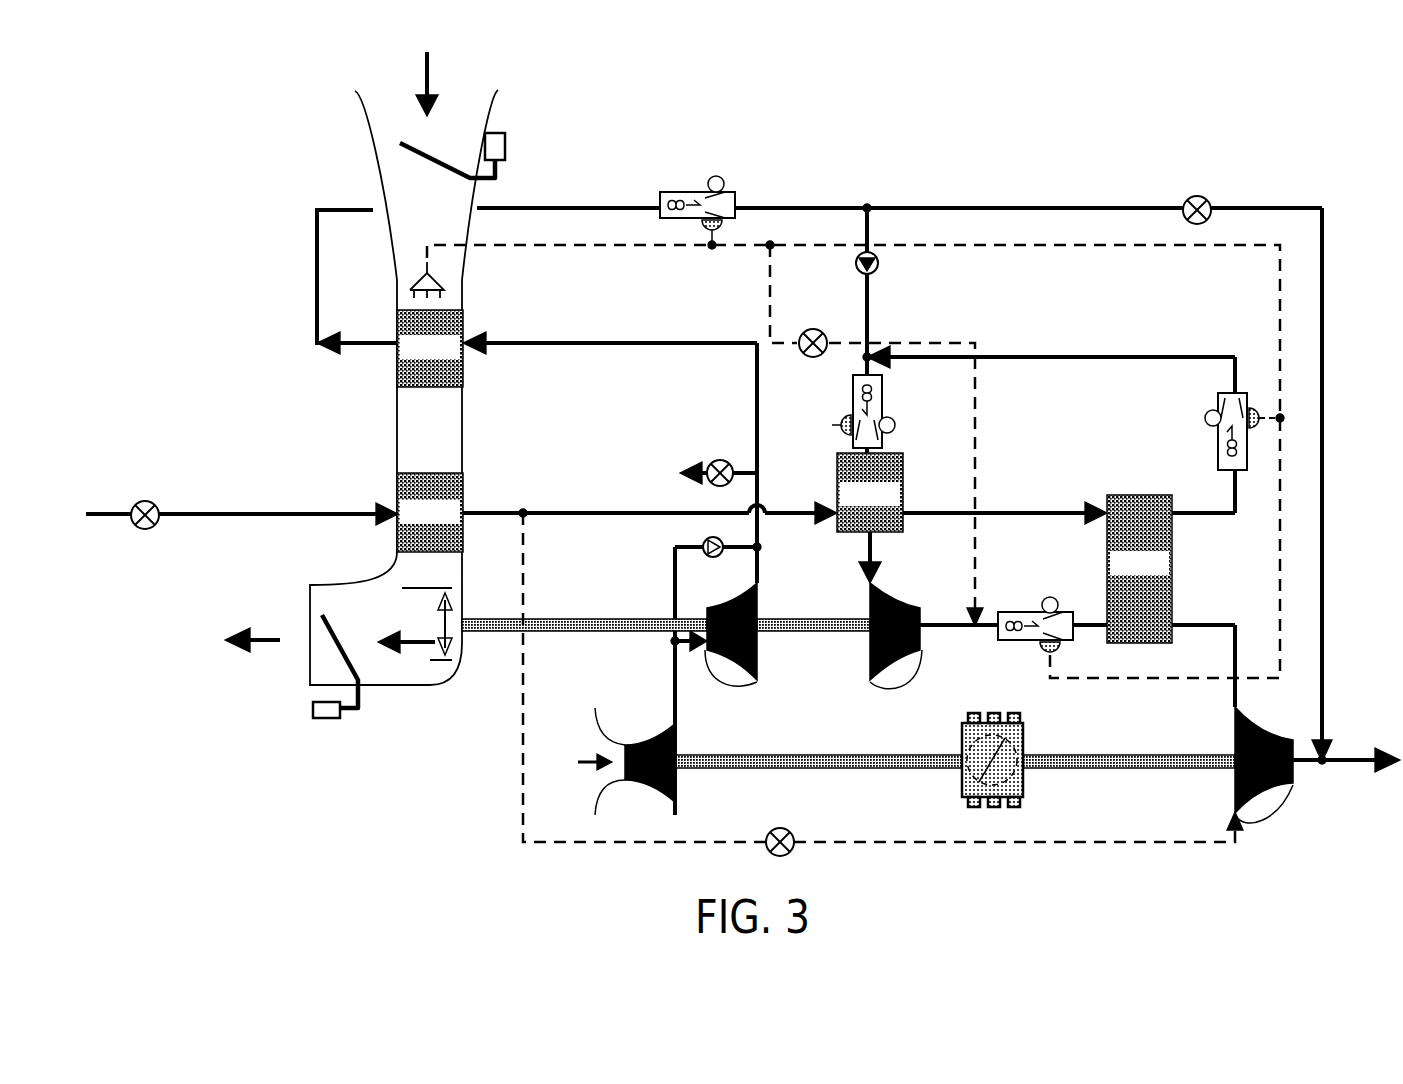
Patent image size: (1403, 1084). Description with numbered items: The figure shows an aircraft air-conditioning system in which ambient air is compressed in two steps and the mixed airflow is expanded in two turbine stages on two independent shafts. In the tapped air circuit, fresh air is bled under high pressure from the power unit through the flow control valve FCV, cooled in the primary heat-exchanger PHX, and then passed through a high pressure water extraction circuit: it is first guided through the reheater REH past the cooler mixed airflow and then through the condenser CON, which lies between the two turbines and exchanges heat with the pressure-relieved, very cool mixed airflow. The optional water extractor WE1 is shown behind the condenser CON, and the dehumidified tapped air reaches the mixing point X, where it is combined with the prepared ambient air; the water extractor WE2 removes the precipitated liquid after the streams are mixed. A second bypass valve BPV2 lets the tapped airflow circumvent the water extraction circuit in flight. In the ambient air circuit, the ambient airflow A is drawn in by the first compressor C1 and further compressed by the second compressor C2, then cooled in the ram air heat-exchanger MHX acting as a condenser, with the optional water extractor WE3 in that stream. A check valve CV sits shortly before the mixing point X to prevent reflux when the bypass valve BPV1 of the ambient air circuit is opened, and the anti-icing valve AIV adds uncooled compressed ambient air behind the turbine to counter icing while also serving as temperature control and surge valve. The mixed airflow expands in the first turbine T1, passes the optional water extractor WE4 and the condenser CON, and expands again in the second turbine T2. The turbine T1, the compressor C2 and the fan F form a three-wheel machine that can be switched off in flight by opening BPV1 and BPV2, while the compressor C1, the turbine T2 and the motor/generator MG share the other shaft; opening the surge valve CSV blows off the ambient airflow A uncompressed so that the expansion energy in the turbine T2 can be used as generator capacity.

The flow control valve FCV is at (242, 505).
The ram air heat-exchanger MHX is at (430, 348).
The primary heat-exchanger PHX is at (430, 512).
The water extractor WE3 is at (697, 204).
The bypass valve BPV1 is at (1203, 198).
The check valve CV is at (883, 264).
The anti-icing valve AIV is at (810, 332).
The mixing point X is at (876, 355).
The water extractor WE2 is at (886, 411).
The surge valve CSV is at (718, 463).
The reheater REH is at (870, 518).
The water extractor WE1 is at (1226, 453).
The condenser CON is at (1139, 569).
The water extractor WE4 is at (1034, 638).
The compressor C2 is at (731, 636).
The turbine T1 is at (900, 636).
The fan F is at (415, 624).
The ambient airflow A is at (593, 753).
The compressor C1 is at (635, 763).
The turbine T2 is at (1264, 766).
The bypass valve BPV2 is at (781, 832).
The motor/generator MG is at (992, 760).